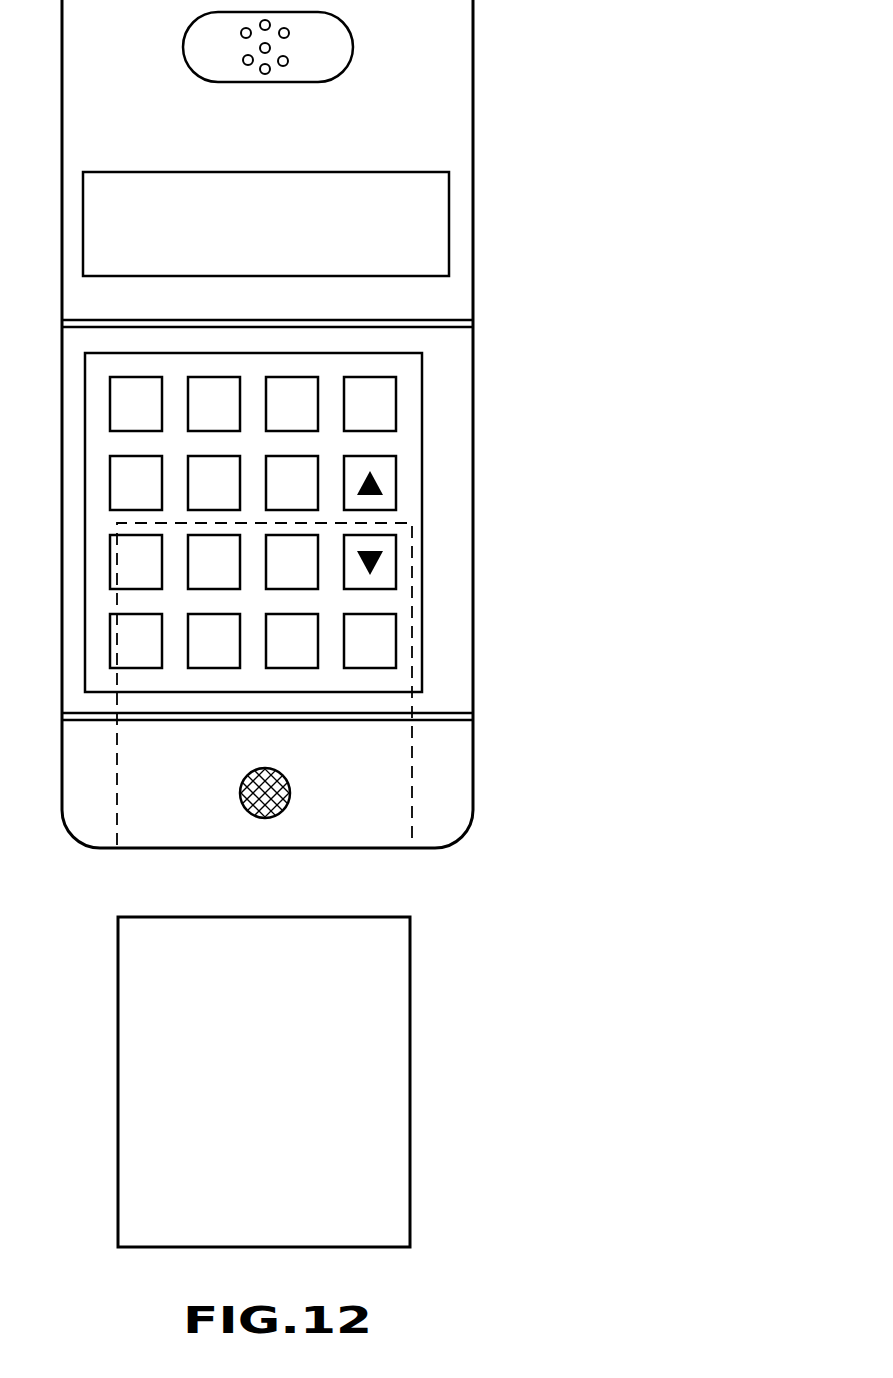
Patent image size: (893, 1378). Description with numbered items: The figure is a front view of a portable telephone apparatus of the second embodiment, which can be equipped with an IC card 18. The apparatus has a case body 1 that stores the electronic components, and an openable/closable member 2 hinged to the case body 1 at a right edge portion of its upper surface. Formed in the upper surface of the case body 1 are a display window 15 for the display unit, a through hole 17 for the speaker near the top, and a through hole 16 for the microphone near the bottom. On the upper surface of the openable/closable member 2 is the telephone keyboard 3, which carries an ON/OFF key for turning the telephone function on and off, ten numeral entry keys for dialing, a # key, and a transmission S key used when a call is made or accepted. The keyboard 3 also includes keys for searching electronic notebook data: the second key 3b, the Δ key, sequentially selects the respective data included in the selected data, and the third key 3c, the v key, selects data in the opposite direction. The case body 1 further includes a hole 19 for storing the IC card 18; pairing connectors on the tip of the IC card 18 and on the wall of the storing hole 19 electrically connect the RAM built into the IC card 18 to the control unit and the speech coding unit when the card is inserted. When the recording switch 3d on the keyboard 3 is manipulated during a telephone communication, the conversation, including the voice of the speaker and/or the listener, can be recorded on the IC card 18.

The case body 1 is at (452, 103).
The openable/closable member 2 is at (457, 368).
The telephone keyboard 3 is at (318, 522).
The second key 3b is at (385, 500).
The third key 3c is at (390, 563).
The recording switch 3d is at (393, 408).
The display window 15 is at (423, 218).
The through hole for the microphone 16 is at (260, 820).
The through hole for the speaker 17 is at (290, 34).
The IC card 18 is at (380, 1045).
The hole for storing the IC card 19 is at (398, 770).